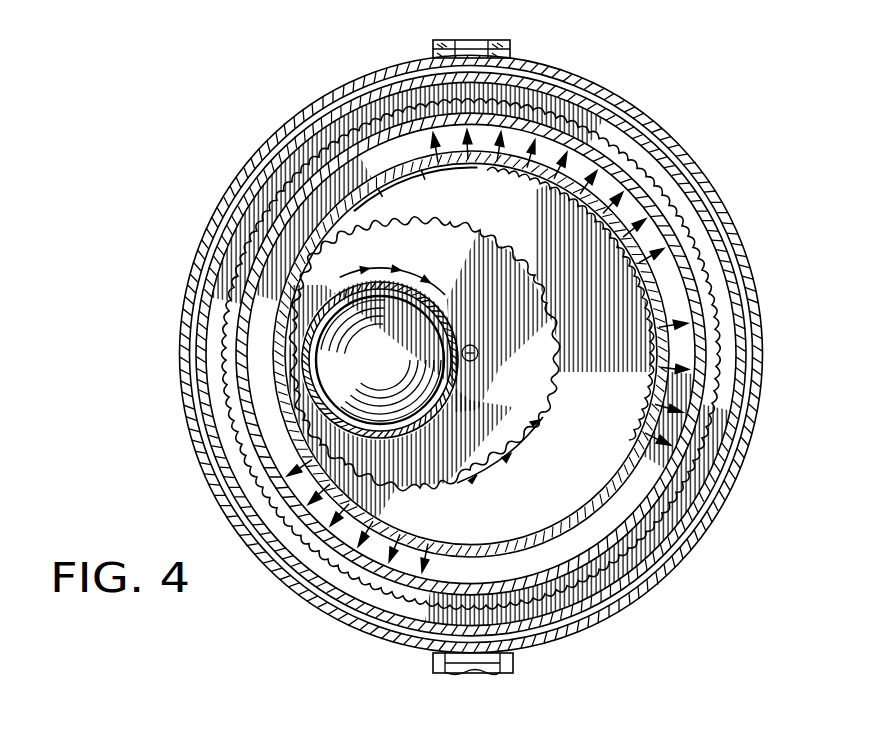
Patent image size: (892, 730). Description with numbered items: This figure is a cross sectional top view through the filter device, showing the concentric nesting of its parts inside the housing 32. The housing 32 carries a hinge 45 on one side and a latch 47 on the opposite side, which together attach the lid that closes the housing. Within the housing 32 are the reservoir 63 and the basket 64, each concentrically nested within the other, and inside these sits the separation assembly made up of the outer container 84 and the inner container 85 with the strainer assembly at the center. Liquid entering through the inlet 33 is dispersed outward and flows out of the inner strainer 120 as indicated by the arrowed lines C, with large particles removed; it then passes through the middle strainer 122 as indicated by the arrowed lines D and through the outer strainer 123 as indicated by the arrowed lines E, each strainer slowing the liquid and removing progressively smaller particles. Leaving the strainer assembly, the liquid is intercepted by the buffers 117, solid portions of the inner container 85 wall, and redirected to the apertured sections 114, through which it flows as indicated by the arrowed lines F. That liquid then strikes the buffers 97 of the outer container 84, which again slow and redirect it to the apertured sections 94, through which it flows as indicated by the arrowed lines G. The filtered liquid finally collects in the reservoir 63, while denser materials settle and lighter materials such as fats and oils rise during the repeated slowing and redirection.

The housing 32 is at (718, 185).
The hinge 45 is at (513, 40).
The latch 47 is at (434, 664).
The inlet 33 is at (443, 294).
The reservoir 63 is at (628, 195).
The basket 64 is at (727, 303).
The outer container 84 is at (697, 280).
The inner container 85 is at (650, 310).
The sections 94 is at (247, 212).
The buffers 97 is at (577, 140).
The sections 114 is at (602, 198).
The buffers 117 is at (660, 287).
The inner strainer 120 is at (455, 411).
The middle strainer 122 is at (560, 378).
The outer strainer 123 is at (640, 370).
The arrowed lines C is at (438, 282).
The arrowed lines D is at (541, 420).
The arrowed lines E is at (463, 180).
The arrowed lines F is at (460, 145).
The arrowed lines G is at (245, 313).